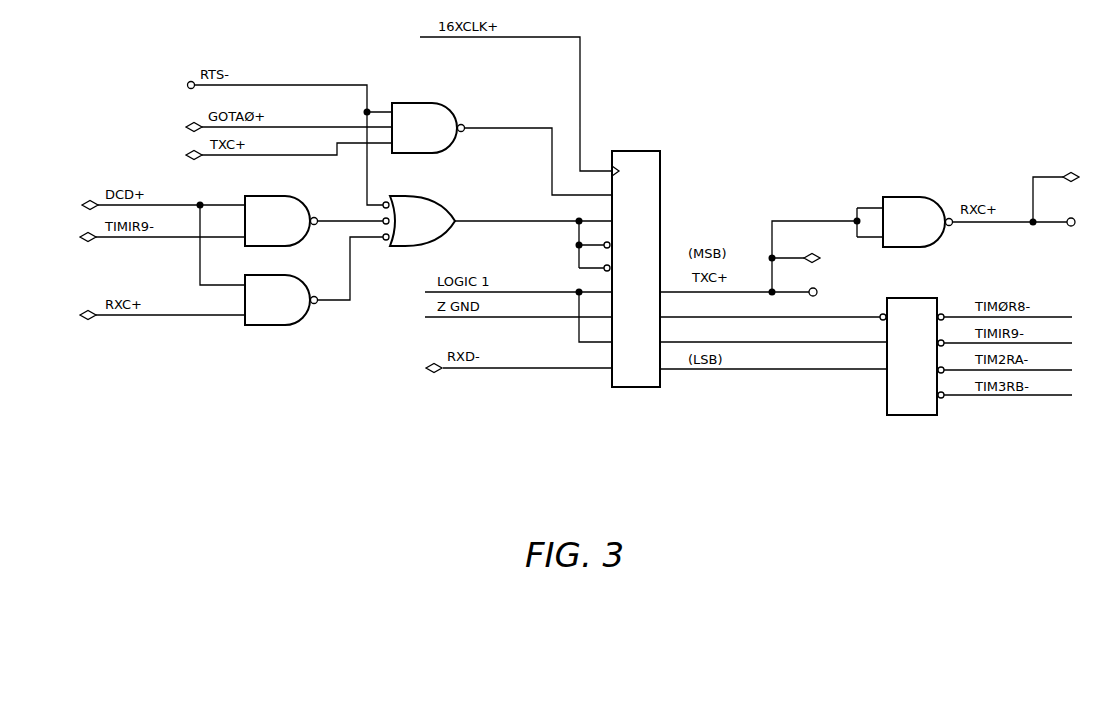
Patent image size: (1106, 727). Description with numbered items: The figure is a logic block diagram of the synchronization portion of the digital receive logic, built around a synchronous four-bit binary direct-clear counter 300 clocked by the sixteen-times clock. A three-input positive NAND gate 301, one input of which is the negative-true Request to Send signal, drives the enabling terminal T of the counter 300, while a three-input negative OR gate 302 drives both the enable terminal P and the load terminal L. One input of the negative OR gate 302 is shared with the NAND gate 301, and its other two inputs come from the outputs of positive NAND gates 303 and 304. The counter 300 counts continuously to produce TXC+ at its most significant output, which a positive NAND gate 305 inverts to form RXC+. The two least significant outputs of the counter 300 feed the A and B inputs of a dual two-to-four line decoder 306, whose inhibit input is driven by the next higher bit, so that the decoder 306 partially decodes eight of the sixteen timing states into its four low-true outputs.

The synchronous 4-bit binary direct-clear counter 300 is at (642, 151).
The three-input positive NAND gate 301 is at (431, 103).
The three-input negative OR gate 302 is at (424, 196).
The positive NAND gate 303 is at (284, 196).
The positive NAND gate 304 is at (284, 275).
The positive NAND gate 305 is at (914, 197).
The dual 2-to-4 line decoder 306 is at (916, 298).